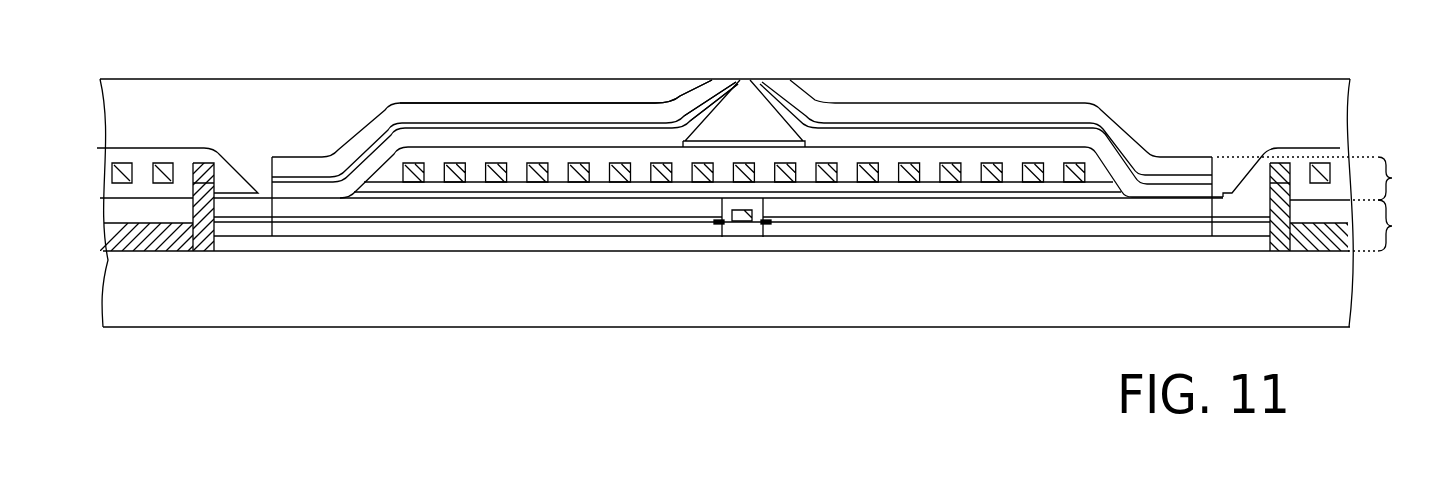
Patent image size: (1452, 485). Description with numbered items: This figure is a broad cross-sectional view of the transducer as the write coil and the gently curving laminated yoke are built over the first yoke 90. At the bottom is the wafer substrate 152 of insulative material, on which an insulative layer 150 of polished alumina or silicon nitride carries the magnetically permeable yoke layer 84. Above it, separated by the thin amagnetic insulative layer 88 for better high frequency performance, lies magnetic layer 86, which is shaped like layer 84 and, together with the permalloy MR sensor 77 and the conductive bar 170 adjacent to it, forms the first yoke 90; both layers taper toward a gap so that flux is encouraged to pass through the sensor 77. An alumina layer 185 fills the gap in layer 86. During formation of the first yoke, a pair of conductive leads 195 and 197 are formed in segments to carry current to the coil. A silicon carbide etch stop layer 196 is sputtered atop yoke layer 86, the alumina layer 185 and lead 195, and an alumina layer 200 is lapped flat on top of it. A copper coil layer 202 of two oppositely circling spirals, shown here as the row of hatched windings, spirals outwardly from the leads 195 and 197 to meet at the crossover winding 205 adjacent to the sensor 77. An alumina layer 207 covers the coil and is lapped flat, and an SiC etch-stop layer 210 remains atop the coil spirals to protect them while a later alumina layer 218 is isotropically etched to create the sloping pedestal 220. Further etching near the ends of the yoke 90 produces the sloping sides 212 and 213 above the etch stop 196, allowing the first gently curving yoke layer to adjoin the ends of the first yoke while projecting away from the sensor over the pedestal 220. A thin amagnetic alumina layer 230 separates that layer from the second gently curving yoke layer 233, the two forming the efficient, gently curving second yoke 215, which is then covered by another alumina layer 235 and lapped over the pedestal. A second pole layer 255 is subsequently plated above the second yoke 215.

The MR sensor 77 is at (757, 224).
The magnetically permeable yoke layer 84 is at (937, 232).
The magnetic layer 86 is at (640, 208).
The insulative layer 88 is at (877, 223).
The first yoke 90 is at (1388, 225).
The insulative layer 150 is at (348, 244).
The wafer substrate 152 is at (1188, 304).
The conductive bar 170 is at (737, 222).
The alumina layer 185 is at (253, 232).
The conductive lead 195 is at (193, 244).
The etch stop layer 196 is at (418, 200).
The conductive lead 197 is at (1300, 250).
The alumina layer 200 is at (538, 187).
The coil layer 202 is at (1028, 182).
The crossover winding 205 is at (752, 163).
The alumina layer 207 is at (128, 160).
The etch-stop layer 210 is at (750, 147).
The sloping side 212 is at (1115, 167).
The sloping side 213 is at (357, 160).
The second yoke 215 is at (1330, 178).
The alumina layer 218 is at (713, 130).
The pedestal 220 is at (733, 103).
The amagnetic layer of alumina 230 is at (972, 123).
The second gently curving yoke layer 233 is at (556, 112).
The alumina layer 235 is at (907, 95).
The second pole layer 255 is at (400, 140).